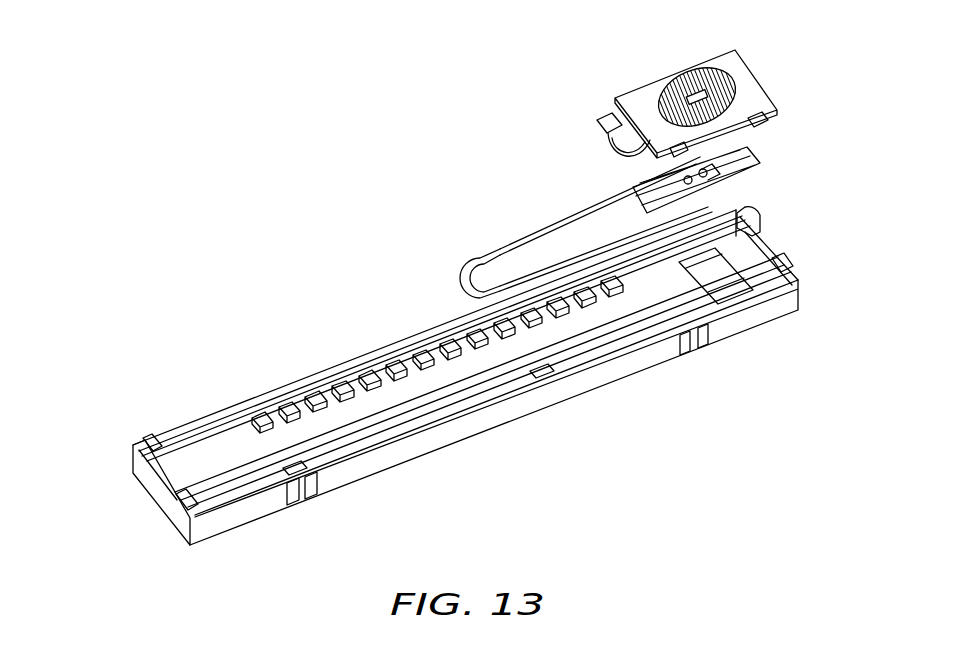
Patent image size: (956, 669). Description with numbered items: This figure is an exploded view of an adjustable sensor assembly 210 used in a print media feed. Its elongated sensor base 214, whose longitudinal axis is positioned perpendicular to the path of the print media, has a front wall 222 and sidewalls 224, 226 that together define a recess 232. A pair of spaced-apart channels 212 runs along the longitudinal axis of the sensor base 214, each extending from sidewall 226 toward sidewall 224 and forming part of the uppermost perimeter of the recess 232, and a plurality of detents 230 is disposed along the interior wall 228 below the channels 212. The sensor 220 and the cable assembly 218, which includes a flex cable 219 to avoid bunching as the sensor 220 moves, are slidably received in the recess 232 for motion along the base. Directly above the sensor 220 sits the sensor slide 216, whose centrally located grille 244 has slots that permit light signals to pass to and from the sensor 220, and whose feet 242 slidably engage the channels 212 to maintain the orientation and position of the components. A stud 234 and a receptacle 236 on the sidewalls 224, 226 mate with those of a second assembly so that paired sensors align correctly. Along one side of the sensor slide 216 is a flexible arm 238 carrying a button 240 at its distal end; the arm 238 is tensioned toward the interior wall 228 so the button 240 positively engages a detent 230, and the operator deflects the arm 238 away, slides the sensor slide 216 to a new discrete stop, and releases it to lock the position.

The adjustable sensor assembly 210 is at (120, 320).
The channels 212 is at (405, 348).
The sensor base 214 is at (371, 348).
The sensor slide 216 is at (722, 62).
The cable assembly 218 is at (472, 258).
The flex cable 219 is at (557, 230).
The sensor 220 is at (757, 160).
The front wall 222 is at (480, 418).
The sidewall 224 is at (152, 483).
The sidewall 226 is at (772, 246).
The interior wall 228 is at (640, 287).
The detents 230 is at (302, 410).
The recess 232 is at (383, 402).
The stud 234 is at (140, 438).
The receptacle 236 is at (166, 512).
The arm 238 is at (603, 132).
The button 240 is at (605, 112).
The feet 242 is at (767, 117).
The grille 244 is at (748, 80).